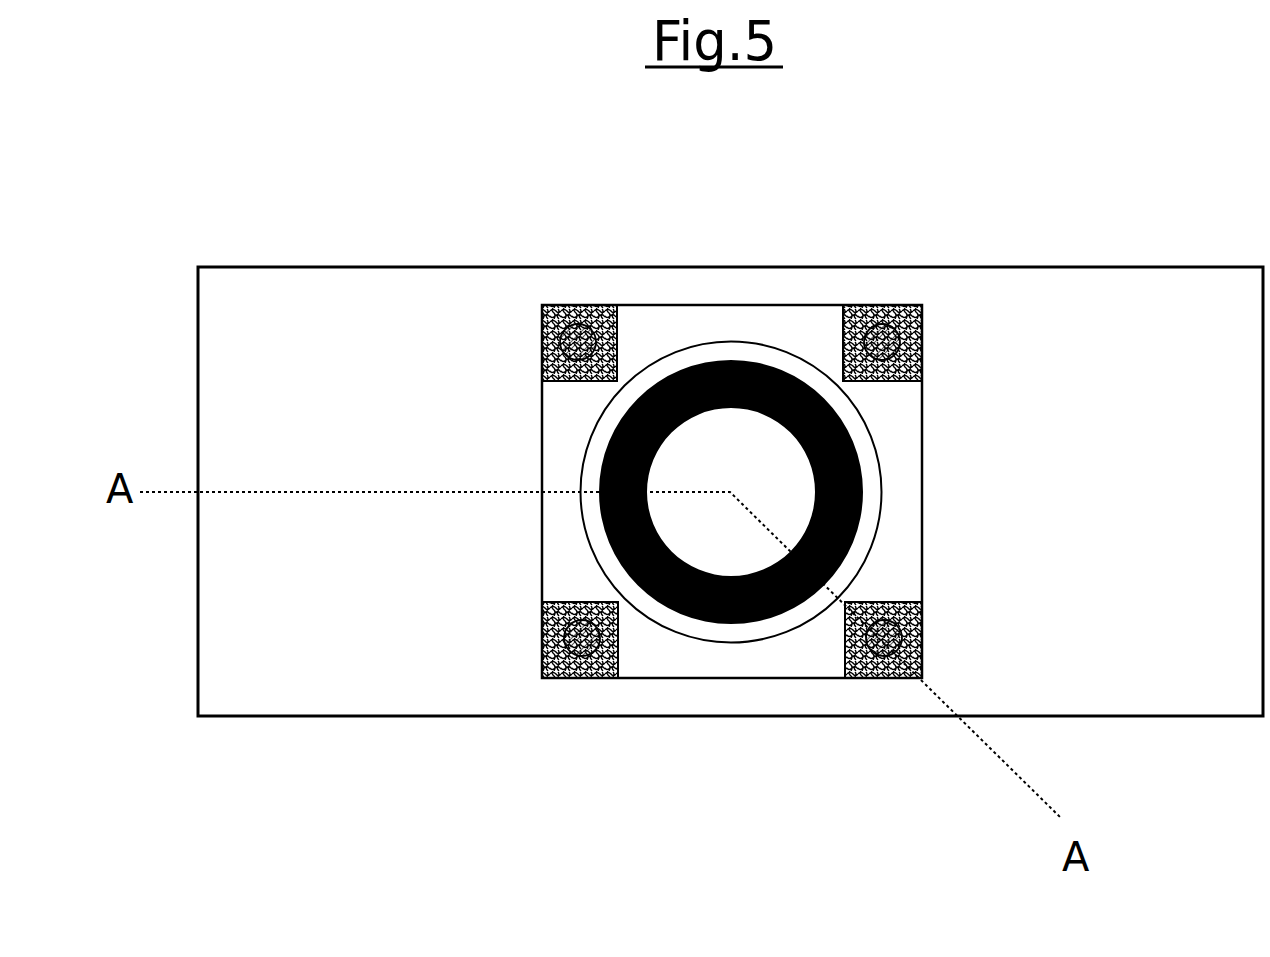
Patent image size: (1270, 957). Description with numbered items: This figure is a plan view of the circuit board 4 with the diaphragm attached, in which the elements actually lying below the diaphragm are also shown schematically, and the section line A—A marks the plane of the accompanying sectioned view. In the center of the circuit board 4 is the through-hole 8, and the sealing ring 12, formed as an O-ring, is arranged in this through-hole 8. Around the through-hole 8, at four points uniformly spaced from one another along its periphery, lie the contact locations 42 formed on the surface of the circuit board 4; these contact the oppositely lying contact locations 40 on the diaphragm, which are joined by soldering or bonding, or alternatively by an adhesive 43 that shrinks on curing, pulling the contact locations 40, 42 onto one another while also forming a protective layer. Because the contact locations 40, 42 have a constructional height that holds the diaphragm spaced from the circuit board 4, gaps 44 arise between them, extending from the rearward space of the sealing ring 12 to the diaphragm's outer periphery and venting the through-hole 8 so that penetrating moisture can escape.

The circuit board 4 is at (317, 665).
The through-hole 8 is at (715, 630).
The sealing ring 12 is at (742, 620).
The contact locations on the diaphragm 40 is at (791, 532).
The contact locations on the circuit board 42 is at (598, 322).
The adhesive 43 is at (555, 303).
The gaps 44 is at (556, 423).